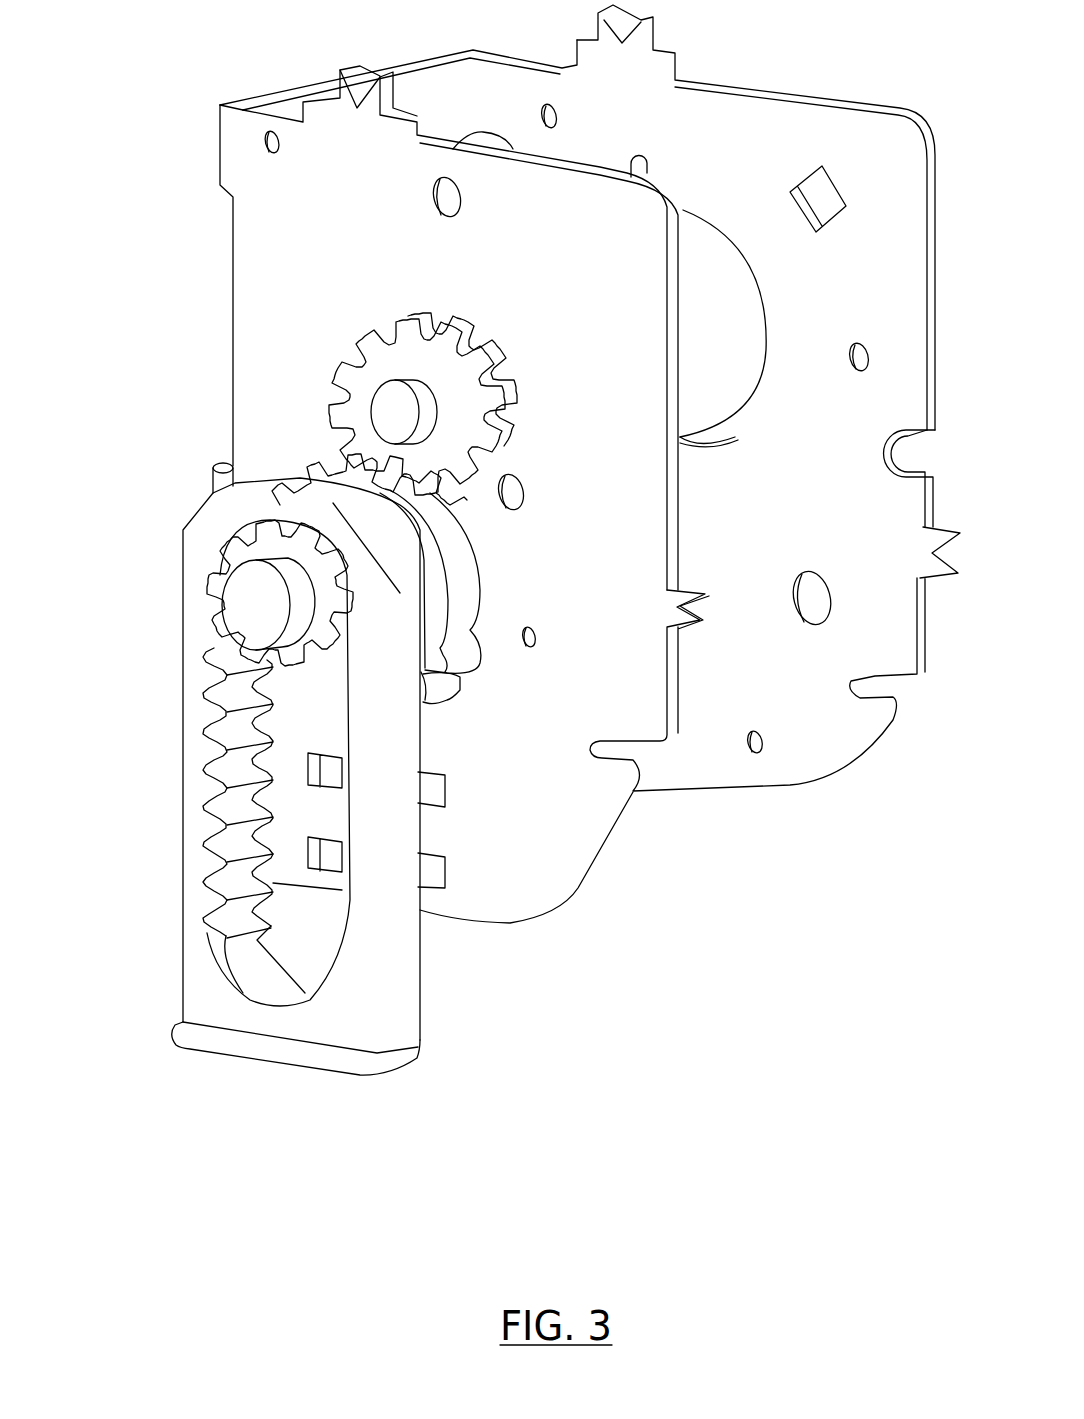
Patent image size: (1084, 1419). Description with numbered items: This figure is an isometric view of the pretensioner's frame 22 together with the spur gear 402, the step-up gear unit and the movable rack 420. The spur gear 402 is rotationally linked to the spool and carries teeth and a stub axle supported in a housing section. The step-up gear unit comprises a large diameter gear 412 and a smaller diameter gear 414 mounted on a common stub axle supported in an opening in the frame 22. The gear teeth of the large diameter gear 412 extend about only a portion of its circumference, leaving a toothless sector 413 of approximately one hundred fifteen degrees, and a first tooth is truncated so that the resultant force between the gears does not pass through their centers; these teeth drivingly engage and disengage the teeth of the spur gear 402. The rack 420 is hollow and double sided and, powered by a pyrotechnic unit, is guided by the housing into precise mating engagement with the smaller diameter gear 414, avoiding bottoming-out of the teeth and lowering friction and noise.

The mounting bracket plate 22 is at (738, 79).
The spur gear 402 is at (463, 331).
The large diameter gear 412 is at (250, 607).
The sector 413 is at (466, 556).
The smaller diameter gear 414 is at (447, 702).
The movable rack 420 is at (370, 1017).